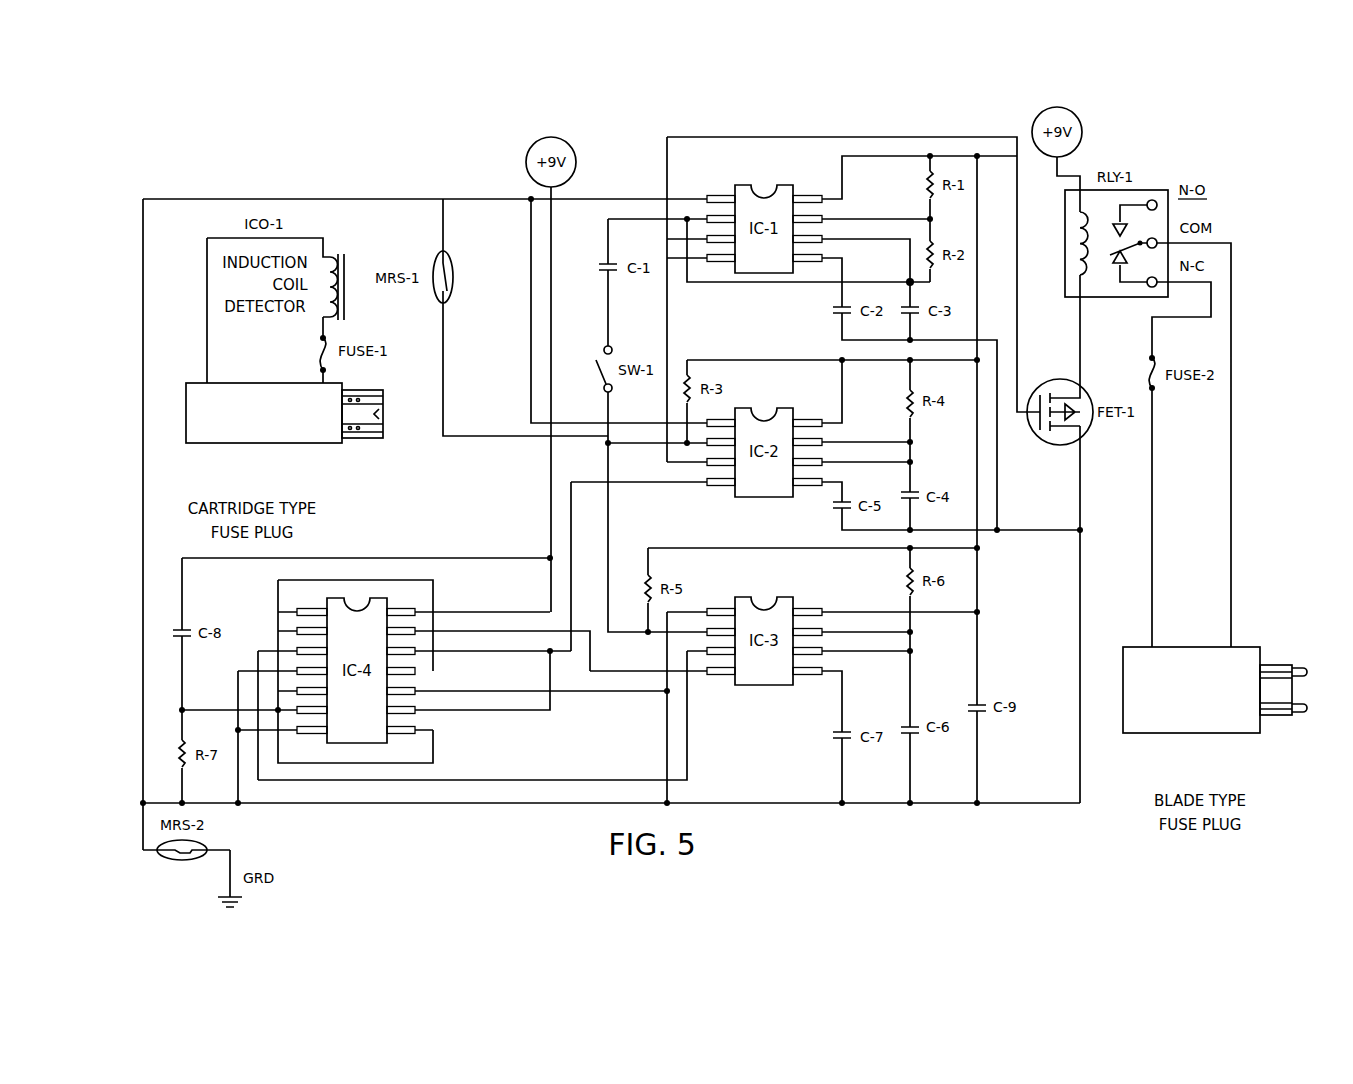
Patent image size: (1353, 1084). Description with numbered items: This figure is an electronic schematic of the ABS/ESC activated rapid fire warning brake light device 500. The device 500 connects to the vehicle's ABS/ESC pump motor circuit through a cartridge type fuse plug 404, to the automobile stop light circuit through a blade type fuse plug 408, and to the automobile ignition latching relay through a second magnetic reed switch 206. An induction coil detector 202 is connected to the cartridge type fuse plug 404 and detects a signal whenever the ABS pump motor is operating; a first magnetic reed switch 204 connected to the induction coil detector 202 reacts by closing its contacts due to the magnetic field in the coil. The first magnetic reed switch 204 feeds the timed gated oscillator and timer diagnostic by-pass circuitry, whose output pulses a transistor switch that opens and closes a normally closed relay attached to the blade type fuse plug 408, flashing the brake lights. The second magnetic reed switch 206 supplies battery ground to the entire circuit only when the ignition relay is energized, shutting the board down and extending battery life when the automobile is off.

The ABS/ESC activated rapid fire warning brake light device 500 is at (210, 150).
The induction coil detector 202 is at (343, 250).
The first magnetic reed switch 204 is at (455, 279).
The cartridge type fuse plug 404 is at (262, 446).
The second magnetic reed switch 206 is at (183, 862).
The blade type fuse plug 408 is at (1190, 736).